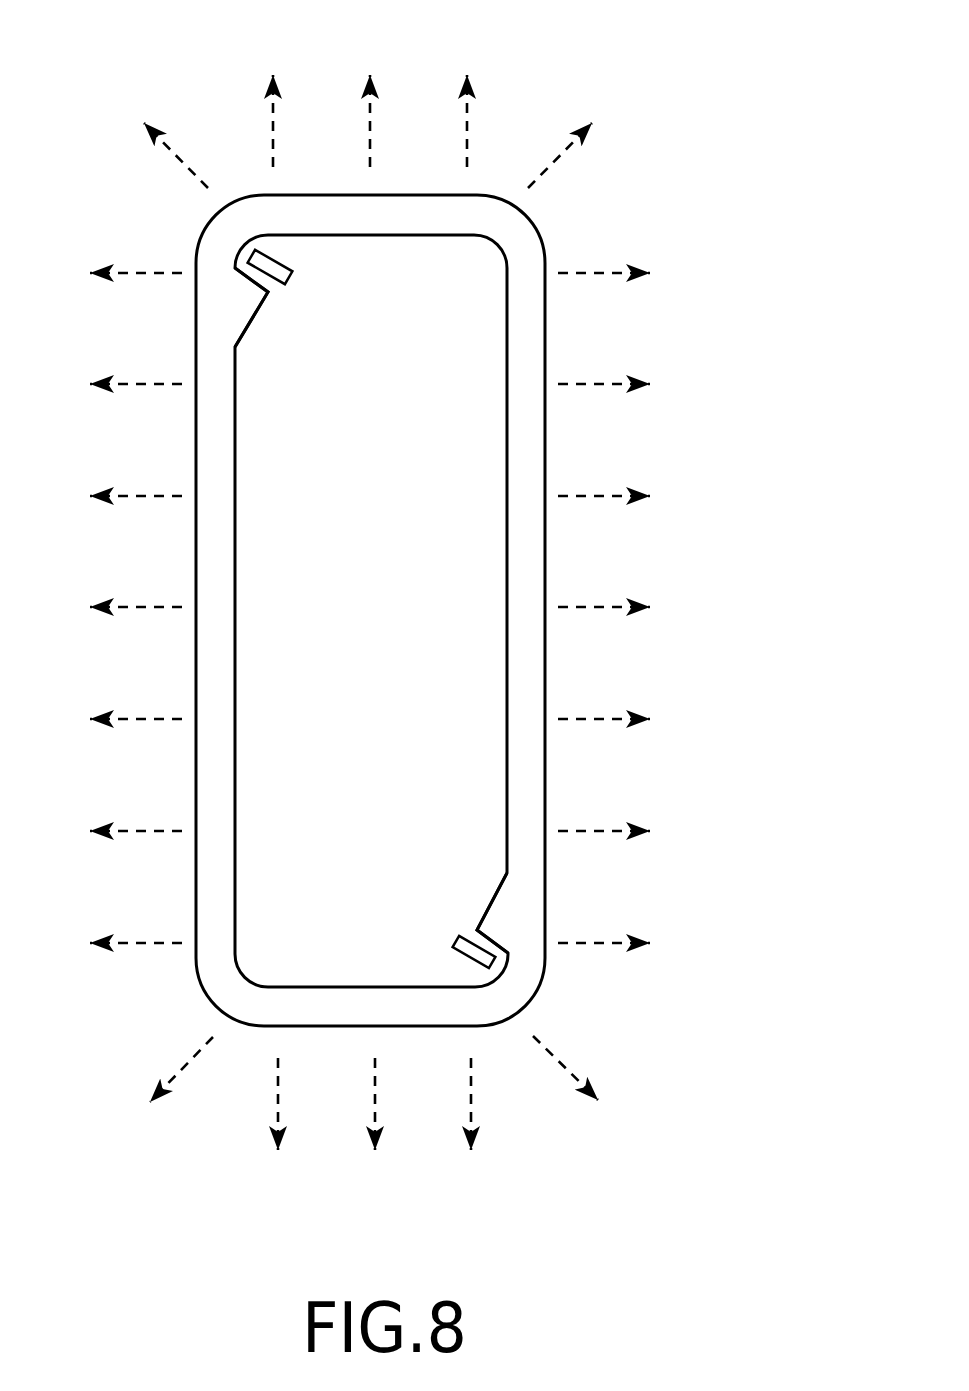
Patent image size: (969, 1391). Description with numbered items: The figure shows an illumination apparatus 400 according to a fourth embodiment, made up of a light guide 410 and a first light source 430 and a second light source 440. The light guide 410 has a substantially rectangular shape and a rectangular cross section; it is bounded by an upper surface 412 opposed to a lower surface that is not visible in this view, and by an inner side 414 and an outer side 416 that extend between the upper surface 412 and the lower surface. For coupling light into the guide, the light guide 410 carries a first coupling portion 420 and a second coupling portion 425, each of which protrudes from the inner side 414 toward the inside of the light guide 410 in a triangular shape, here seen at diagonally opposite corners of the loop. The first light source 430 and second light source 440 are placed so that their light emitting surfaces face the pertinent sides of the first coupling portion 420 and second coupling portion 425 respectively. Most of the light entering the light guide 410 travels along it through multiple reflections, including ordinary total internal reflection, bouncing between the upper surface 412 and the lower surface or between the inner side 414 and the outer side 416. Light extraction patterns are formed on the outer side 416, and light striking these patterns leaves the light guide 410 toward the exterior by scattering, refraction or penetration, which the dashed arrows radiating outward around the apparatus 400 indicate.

The illumination apparatus 400 is at (393, 37).
The light guide 410 is at (370, 612).
The upper surface 412 is at (518, 242).
The inner side 414 is at (507, 552).
The outer side 416 is at (545, 551).
The first coupling portion 420 is at (252, 327).
The second coupling portion 425 is at (492, 902).
The first light source 430 is at (290, 280).
The second light source 440 is at (457, 943).